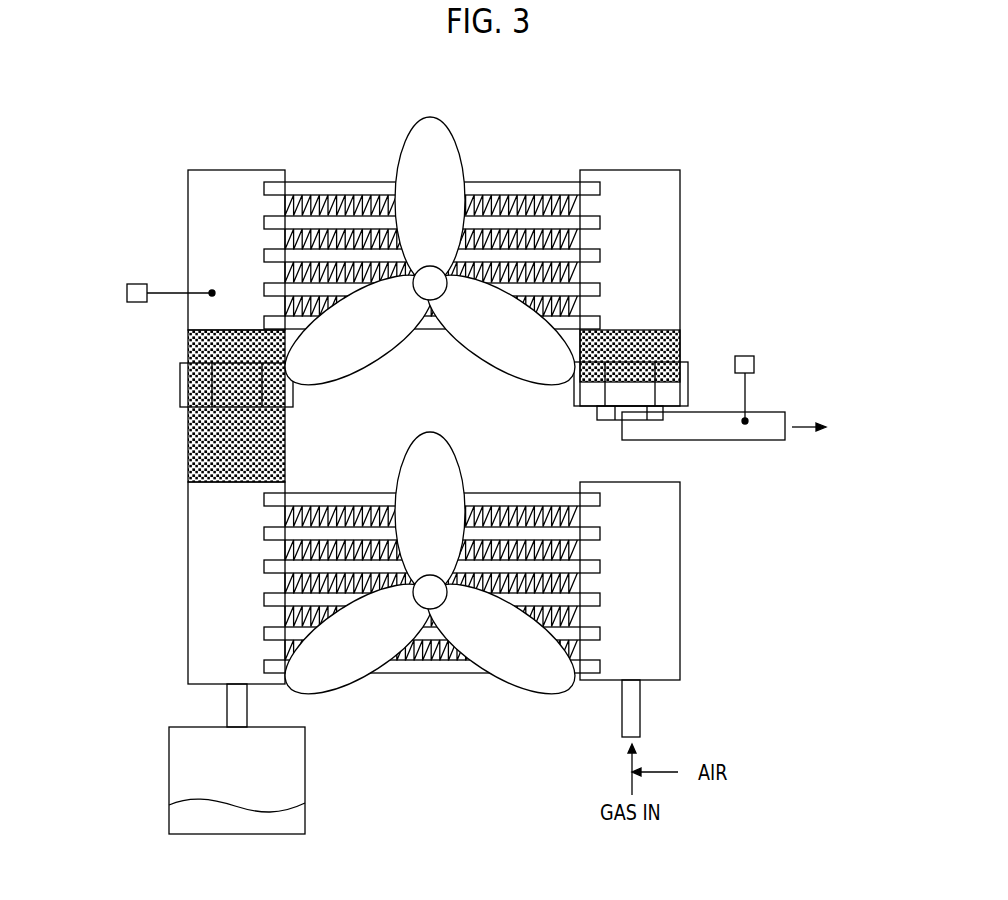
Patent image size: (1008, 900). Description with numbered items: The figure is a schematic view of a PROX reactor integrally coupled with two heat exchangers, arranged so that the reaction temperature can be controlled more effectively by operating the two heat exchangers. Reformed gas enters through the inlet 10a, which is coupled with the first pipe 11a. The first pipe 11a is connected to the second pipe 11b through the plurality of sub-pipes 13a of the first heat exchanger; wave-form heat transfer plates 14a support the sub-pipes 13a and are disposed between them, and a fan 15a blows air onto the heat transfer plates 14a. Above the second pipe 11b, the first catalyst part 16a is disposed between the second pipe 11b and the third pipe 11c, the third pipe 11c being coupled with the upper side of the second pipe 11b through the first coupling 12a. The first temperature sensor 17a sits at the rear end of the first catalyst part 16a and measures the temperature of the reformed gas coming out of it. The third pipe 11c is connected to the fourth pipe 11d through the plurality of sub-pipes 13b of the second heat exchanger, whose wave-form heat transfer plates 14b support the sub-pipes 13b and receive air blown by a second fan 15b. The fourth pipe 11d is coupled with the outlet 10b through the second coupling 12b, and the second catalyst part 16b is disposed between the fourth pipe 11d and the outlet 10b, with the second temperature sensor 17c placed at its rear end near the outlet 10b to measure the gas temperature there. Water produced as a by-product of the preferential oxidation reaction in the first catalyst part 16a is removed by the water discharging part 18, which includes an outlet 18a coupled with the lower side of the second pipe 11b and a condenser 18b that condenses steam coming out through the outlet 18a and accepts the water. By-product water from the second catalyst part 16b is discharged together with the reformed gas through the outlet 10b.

The inlet 10a is at (636, 716).
The outlet 10b is at (742, 440).
The first pipe 11a is at (680, 566).
The second pipe 11b is at (188, 576).
The third pipe 11c is at (188, 232).
The fourth pipe 11d is at (680, 214).
The first coupling 12a is at (180, 390).
The second coupling 12b is at (688, 384).
The sub-pipes 13a is at (548, 493).
The sub-pipes 13b is at (560, 182).
The heat transfer plates 14a is at (493, 507).
The heat transfer plates 14b is at (492, 196).
The fan 15a is at (516, 690).
The fan 15b is at (446, 122).
The first catalyst part 16a is at (188, 450).
The second catalyst part 16b is at (648, 334).
The first temperature sensor 17a is at (127, 291).
The second temperature sensor 17c is at (745, 356).
The water discharging part 18 is at (90, 688).
The outlet 18a is at (227, 690).
The condenser 18b is at (169, 768).